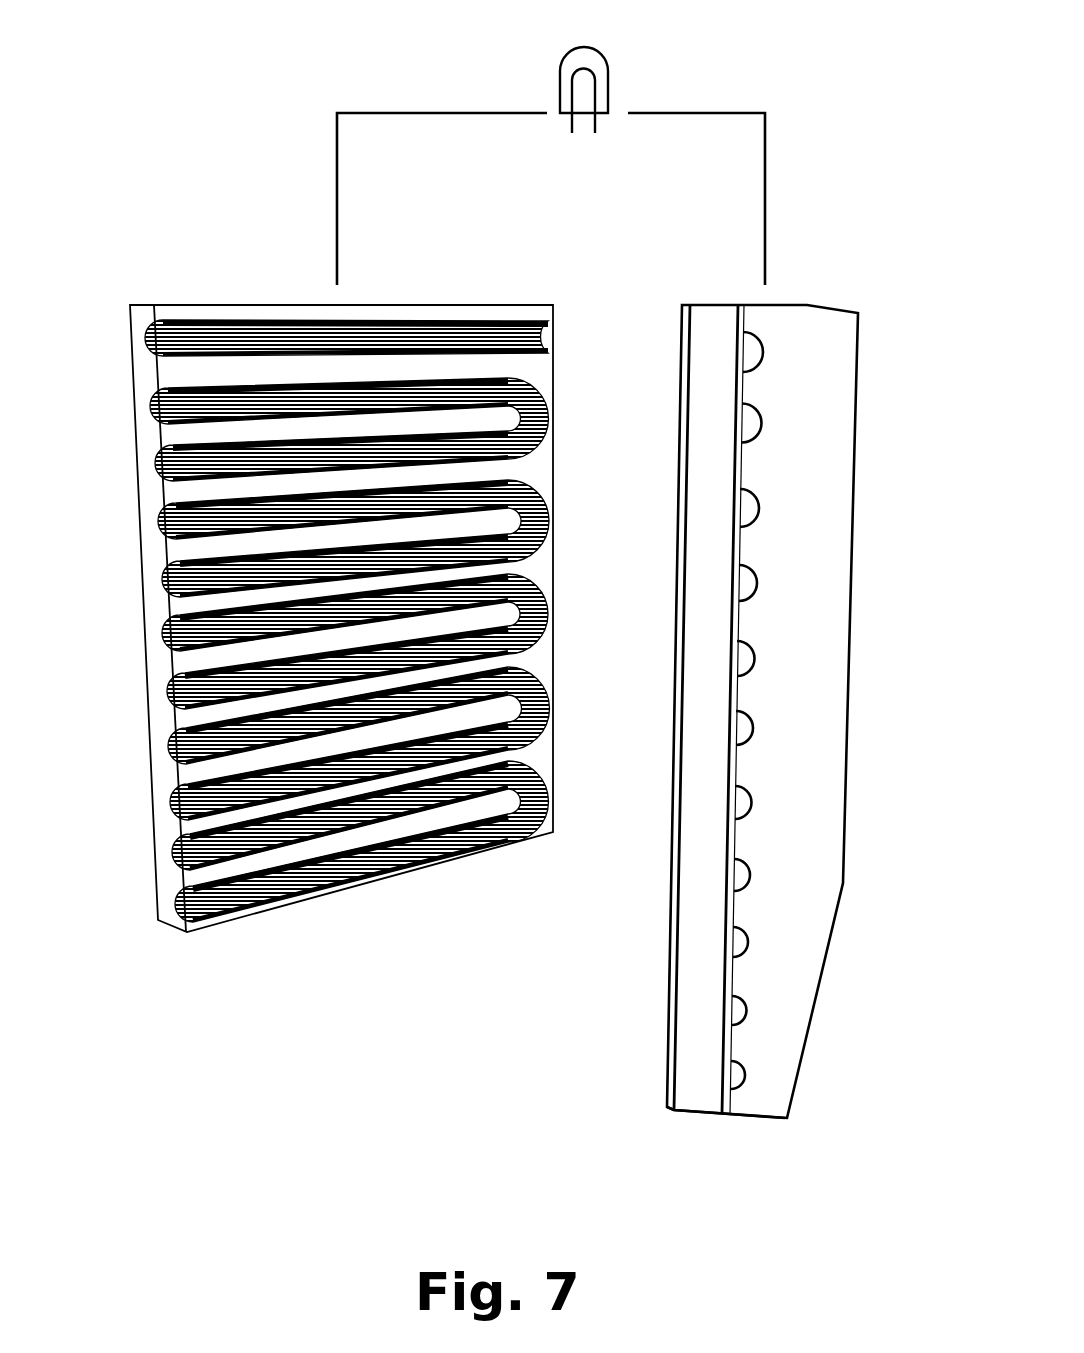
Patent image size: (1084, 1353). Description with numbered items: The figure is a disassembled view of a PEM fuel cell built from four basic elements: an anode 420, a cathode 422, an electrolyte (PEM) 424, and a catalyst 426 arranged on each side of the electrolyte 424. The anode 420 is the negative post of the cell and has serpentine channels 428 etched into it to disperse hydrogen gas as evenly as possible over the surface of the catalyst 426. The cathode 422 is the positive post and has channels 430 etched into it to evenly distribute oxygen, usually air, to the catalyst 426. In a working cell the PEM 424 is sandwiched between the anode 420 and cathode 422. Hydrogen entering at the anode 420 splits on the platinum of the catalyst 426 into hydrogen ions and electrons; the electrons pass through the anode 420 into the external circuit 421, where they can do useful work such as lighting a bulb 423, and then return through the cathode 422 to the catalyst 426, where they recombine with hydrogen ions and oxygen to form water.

The anode 420 is at (163, 725).
The external circuit 421 is at (405, 112).
The cathode 422 is at (760, 755).
The bulb 423 is at (560, 67).
The electrolyte (PEM) 424 is at (707, 748).
The catalyst 426 is at (728, 1100).
The channels 428 is at (176, 524).
The channels 430 is at (765, 352).